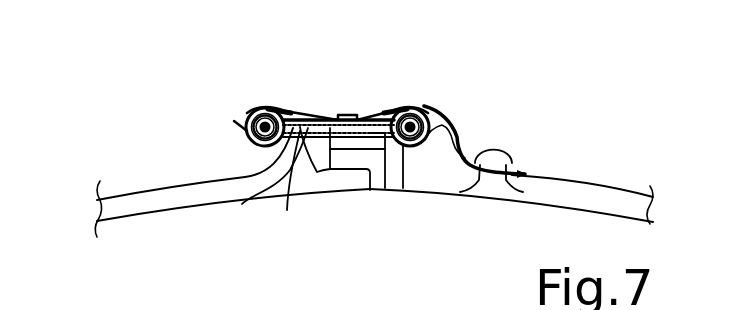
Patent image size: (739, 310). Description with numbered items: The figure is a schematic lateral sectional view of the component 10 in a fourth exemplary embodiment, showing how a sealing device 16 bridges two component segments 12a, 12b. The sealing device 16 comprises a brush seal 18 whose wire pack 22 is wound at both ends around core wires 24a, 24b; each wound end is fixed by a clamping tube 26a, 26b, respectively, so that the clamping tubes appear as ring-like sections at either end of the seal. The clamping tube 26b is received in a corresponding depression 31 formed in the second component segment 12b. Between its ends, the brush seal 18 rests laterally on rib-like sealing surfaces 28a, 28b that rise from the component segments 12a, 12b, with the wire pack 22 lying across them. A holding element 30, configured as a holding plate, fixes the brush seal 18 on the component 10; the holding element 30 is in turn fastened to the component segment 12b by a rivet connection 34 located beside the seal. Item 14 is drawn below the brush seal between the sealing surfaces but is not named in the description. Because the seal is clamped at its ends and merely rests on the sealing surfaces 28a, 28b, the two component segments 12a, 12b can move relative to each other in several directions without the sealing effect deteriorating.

The component 10 is at (155, 66).
The first component segment 12a is at (117, 199).
The second component segment 12b is at (611, 191).
The base / support 14 is at (348, 180).
The sealing device 16 is at (491, 80).
The brush seal 18 is at (220, 137).
The wire pack 22 is at (287, 210).
The first core wire 24a is at (267, 124).
The second core wire 24b is at (411, 122).
The first clamping tube 26a is at (234, 121).
The second clamping tube 26b is at (432, 117).
The first rib-like sealing surface 28a is at (242, 204).
The second rib-like sealing surface 28b is at (393, 158).
The holding element 30 is at (452, 133).
The depression 31 is at (459, 151).
The rivet connection 34 is at (489, 199).